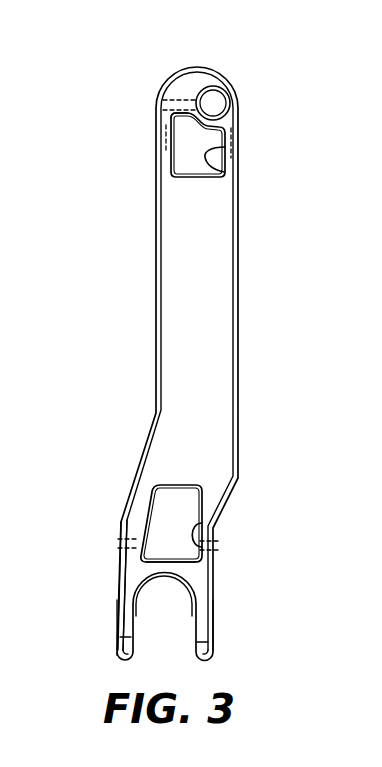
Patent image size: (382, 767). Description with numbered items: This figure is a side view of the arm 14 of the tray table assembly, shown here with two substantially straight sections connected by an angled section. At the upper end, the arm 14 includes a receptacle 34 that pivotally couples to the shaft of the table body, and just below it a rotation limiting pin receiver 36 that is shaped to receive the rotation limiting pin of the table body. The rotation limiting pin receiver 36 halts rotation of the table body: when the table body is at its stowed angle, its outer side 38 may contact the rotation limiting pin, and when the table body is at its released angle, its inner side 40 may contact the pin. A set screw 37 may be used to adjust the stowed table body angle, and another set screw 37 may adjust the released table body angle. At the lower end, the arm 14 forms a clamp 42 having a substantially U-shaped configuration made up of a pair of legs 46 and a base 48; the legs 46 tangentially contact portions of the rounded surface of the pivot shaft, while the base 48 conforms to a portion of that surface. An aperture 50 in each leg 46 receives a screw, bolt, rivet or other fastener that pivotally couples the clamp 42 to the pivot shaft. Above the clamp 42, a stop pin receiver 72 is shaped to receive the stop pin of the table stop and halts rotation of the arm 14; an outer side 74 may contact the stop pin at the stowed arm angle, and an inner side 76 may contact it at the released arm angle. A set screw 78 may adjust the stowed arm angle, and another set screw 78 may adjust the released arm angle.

The arm 14 is at (225, 345).
The receptacle 34 is at (217, 100).
The rotation limiting pin receiver 36 is at (187, 162).
The set screw 37 is at (153, 137).
The outer side 38 is at (206, 154).
The inner side 40 is at (175, 120).
The clamp 42 is at (125, 573).
The legs 46 is at (117, 610).
The base 48 is at (180, 574).
The aperture 50 is at (115, 645).
The stop pin receiver 72 is at (162, 515).
The outer side 74 is at (195, 533).
The inner side 76 is at (135, 563).
The set screw 78 is at (122, 544).